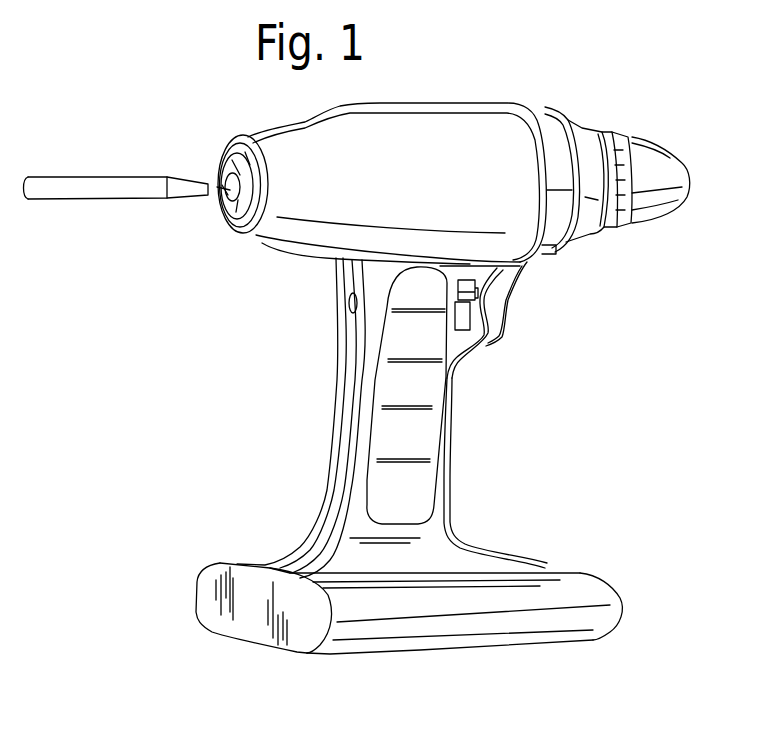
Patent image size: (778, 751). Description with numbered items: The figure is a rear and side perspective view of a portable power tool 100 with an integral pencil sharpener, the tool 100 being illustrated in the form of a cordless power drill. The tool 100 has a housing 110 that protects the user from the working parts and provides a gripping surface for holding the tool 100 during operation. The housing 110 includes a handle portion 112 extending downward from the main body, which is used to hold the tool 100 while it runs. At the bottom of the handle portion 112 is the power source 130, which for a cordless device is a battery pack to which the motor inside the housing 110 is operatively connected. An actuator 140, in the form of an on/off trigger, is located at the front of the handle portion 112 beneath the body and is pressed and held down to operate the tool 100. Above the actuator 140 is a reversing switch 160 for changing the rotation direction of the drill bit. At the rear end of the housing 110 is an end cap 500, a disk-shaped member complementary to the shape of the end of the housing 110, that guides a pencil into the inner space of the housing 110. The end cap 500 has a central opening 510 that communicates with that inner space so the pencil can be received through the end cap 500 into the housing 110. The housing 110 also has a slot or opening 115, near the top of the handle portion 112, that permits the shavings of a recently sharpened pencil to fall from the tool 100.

The portable power tool 100 is at (469, 99).
The housing 110 is at (290, 241).
The handle portion 112 is at (345, 430).
The slot or opening 115 is at (350, 300).
The power source 130 is at (207, 580).
The actuator 140 is at (512, 308).
The reversing switch 160 is at (463, 280).
The end cap 500 is at (230, 148).
The central opening 510 is at (227, 203).